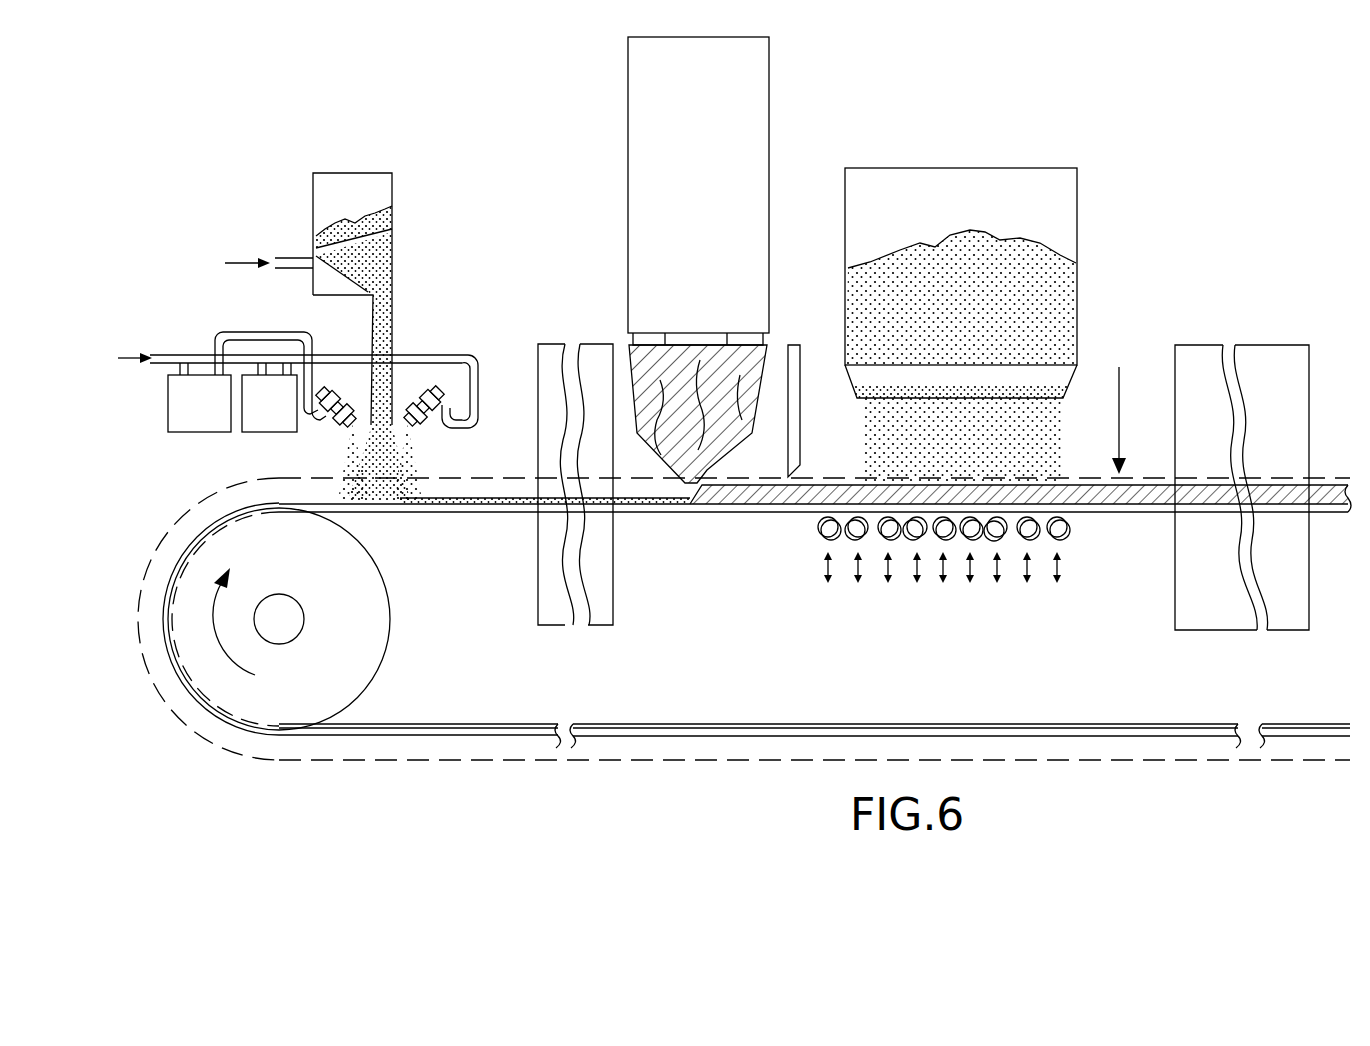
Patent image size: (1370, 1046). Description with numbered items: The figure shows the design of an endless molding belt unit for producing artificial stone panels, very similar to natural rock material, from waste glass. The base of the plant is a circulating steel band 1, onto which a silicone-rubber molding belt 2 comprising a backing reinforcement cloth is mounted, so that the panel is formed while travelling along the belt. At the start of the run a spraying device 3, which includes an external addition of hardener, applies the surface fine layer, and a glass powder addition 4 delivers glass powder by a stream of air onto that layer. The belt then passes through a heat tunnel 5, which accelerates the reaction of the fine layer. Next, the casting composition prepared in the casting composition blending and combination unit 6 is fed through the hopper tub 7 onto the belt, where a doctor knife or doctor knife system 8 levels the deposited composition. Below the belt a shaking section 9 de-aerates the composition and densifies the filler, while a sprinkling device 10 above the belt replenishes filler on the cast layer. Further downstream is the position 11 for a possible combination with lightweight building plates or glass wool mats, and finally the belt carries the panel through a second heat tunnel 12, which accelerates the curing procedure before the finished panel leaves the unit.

The circulating steel band 1 is at (393, 514).
The silicone-rubber molding belt 2 is at (450, 512).
The spraying device 3 is at (207, 388).
The glass powder addition 4 is at (392, 320).
The heat tunnel 5 is at (590, 344).
The casting composition blending and combination unit 6 is at (657, 141).
The hopper tub 7 is at (702, 344).
The doctor knife 8 is at (795, 360).
The shaking section 9 is at (838, 533).
The sprinkling device 10 is at (1010, 385).
The position for combination with lightweight building plates or glass wool mats 11 is at (1121, 392).
The heat tunnel 12 is at (1200, 378).